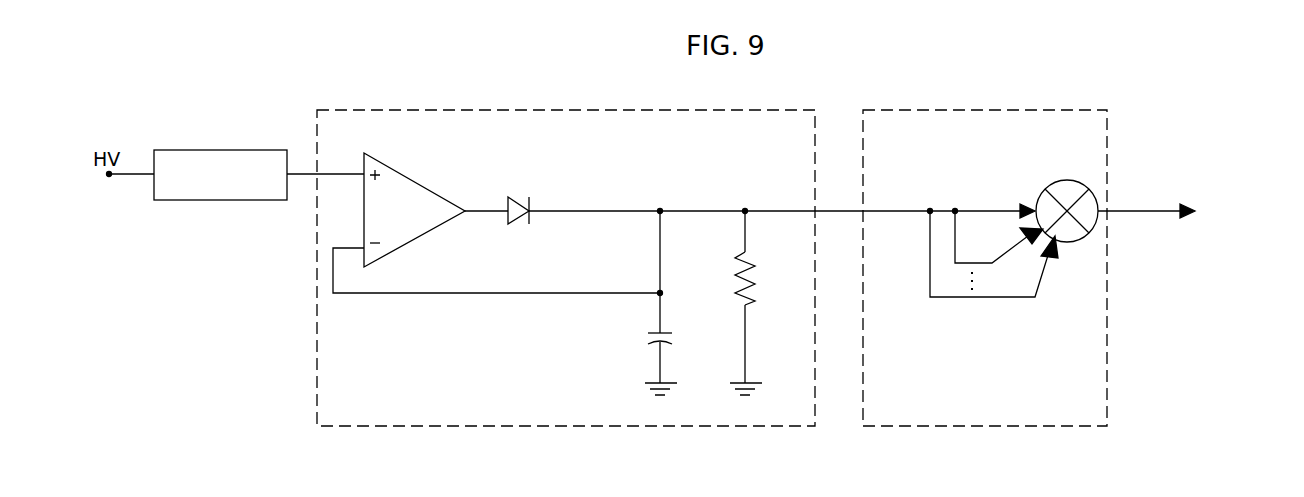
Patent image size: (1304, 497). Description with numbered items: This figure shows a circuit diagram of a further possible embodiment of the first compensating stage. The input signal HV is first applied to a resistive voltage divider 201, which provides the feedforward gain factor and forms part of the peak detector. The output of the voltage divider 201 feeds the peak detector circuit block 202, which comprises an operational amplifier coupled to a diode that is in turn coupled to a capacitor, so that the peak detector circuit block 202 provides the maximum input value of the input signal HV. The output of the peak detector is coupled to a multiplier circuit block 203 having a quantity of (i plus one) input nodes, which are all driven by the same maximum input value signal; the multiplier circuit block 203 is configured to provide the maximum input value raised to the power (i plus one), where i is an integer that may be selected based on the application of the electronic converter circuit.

The voltage divider 201 is at (216, 200).
The peak detector circuit block 202 is at (340, 394).
The multiplier circuit block 203 is at (1085, 388).